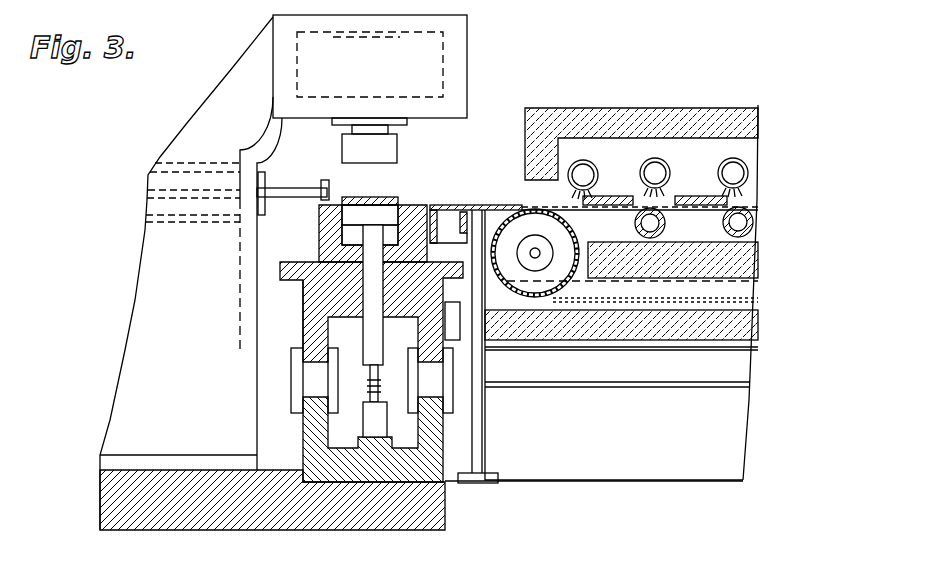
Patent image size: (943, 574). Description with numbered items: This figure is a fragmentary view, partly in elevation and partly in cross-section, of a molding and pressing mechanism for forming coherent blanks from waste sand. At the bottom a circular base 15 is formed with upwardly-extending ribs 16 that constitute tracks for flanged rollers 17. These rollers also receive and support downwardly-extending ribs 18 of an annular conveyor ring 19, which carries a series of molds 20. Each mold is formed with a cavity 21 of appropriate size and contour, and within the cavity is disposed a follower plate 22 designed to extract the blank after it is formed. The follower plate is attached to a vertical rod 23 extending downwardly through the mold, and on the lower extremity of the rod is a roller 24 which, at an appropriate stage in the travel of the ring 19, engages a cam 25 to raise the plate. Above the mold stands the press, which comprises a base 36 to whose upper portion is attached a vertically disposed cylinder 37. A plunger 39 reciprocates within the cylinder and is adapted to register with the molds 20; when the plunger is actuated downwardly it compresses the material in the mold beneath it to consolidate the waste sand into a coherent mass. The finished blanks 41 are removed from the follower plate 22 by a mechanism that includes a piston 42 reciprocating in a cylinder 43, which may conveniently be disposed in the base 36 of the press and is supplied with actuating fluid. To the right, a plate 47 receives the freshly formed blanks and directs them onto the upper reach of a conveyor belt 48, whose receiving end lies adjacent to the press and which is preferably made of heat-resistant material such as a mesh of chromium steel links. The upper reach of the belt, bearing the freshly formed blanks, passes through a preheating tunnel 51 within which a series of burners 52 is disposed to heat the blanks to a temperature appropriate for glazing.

The circular base 15 is at (353, 473).
The upwardly-extending ribs 16 is at (310, 440).
The flanged rollers 17 is at (295, 390).
The downwardly-extending ribs 18 is at (302, 335).
The annular conveyor ring 19 is at (280, 265).
The molds 20 is at (423, 203).
The cavities 21 is at (350, 240).
The follower plates 22 is at (401, 203).
The vertical rod 23 is at (377, 347).
The roller 24 is at (370, 386).
The cam 25 is at (380, 422).
The base 36 is at (152, 360).
The cylinder 37 is at (458, 53).
The plunger 39 is at (342, 145).
The blanks 41 is at (356, 200).
The piston 42 is at (288, 187).
The cylinder 43 is at (170, 225).
The plate 47 is at (467, 203).
The conveyor belt 48 is at (637, 300).
The preheating tunnel 51 is at (632, 112).
The burners 52 is at (643, 171).